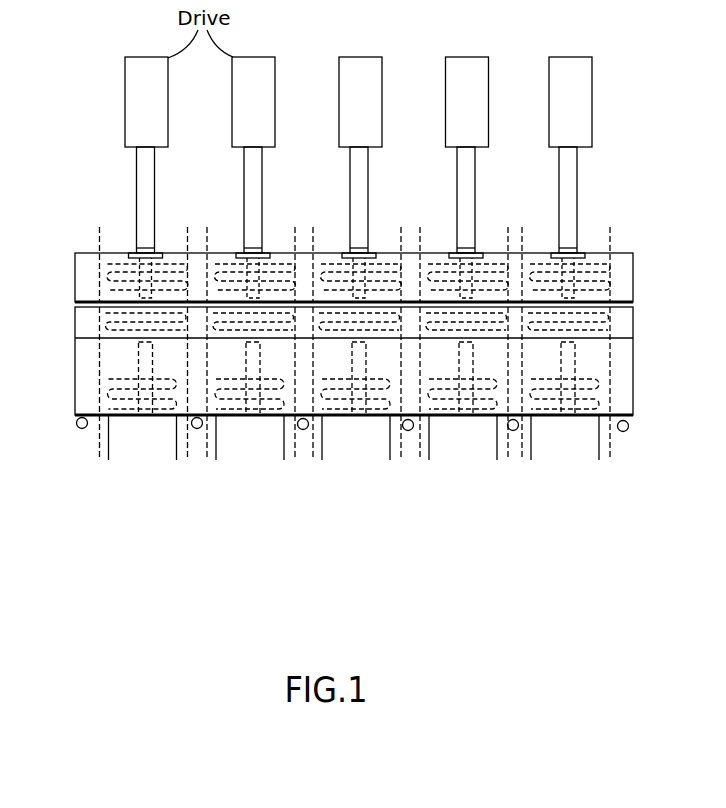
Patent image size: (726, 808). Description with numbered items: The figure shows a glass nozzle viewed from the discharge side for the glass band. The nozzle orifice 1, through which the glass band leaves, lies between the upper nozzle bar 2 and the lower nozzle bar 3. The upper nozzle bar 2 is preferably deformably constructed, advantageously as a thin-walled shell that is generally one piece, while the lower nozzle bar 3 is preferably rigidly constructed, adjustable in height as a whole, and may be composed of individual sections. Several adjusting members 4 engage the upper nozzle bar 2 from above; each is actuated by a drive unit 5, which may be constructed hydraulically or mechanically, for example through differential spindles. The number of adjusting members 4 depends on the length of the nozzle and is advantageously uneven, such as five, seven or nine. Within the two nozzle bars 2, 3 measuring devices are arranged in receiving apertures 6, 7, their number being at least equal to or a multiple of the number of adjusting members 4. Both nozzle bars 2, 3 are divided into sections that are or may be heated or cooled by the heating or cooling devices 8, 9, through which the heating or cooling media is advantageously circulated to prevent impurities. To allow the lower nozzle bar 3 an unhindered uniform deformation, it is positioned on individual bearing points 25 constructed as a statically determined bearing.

The nozzle orifice 1 is at (75, 303).
The upper nozzle bar 2 is at (75, 267).
The lower nozzle bar 3 is at (82, 357).
The adjusting member 4 is at (154, 185).
The drive unit 5 is at (232, 97).
The receiving aperture 6 is at (140, 273).
The receiving aperture 7 is at (140, 357).
The heating or cooling device 8 is at (173, 262).
The heating or cooling device 9 is at (102, 322).
The bearing point 25 is at (201, 427).